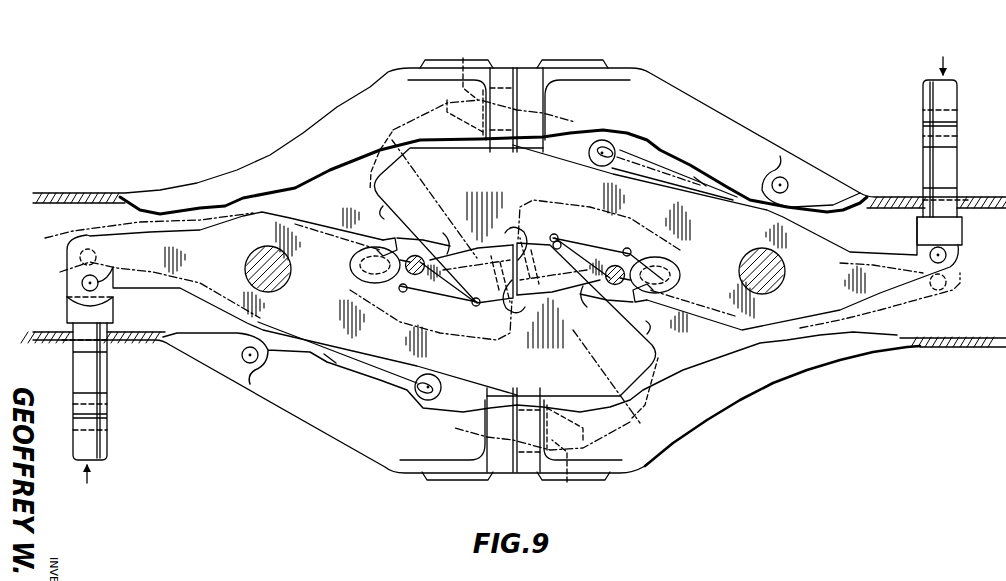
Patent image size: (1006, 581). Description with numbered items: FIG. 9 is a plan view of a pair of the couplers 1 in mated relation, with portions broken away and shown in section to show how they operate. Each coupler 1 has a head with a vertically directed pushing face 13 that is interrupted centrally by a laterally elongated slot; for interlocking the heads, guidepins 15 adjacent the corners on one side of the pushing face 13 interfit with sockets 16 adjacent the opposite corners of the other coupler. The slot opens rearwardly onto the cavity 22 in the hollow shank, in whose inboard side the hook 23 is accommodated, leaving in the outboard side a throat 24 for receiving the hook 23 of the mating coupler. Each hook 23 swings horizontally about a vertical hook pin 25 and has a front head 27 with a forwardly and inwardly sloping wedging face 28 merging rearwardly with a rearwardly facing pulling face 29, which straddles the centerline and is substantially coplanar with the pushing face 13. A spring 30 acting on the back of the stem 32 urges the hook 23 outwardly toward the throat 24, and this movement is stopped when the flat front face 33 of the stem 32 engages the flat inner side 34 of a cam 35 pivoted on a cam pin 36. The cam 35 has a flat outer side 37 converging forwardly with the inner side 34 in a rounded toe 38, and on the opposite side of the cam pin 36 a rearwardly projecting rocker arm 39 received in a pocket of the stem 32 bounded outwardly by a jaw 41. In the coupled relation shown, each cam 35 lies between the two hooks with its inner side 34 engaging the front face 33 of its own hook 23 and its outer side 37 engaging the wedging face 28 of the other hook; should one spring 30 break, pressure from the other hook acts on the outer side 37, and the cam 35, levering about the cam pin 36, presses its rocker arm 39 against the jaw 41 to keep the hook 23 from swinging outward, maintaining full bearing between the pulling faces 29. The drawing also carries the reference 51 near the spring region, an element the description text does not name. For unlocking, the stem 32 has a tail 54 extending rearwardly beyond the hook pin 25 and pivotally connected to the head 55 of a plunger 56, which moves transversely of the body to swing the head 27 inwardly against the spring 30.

The coupler 1 is at (411, 65).
The pushing face 13 is at (513, 68).
The guidepins 15 is at (464, 80).
The sockets 16 is at (497, 80).
The cavity 22 is at (648, 152).
The hook 23 is at (397, 127).
The throat 24 is at (355, 172).
The hook pin 25 is at (246, 270).
The head 27 is at (461, 198).
The wedging face 28 is at (384, 208).
The pulling face 29 is at (516, 236).
The spring 30 is at (701, 180).
The stem 32 is at (304, 300).
The front face 33 is at (403, 292).
The inner side 34 is at (440, 294).
The cam 35 is at (472, 258).
The cam pin 36 is at (416, 275).
The outer side 37 is at (448, 254).
The toe 38 is at (477, 298).
The rocker arm 39 is at (363, 259).
The jaw 41 is at (381, 236).
The pivot 51 is at (603, 148).
The tail 54 is at (79, 281).
The head 55 is at (67, 302).
The plunger 56 is at (72, 377).